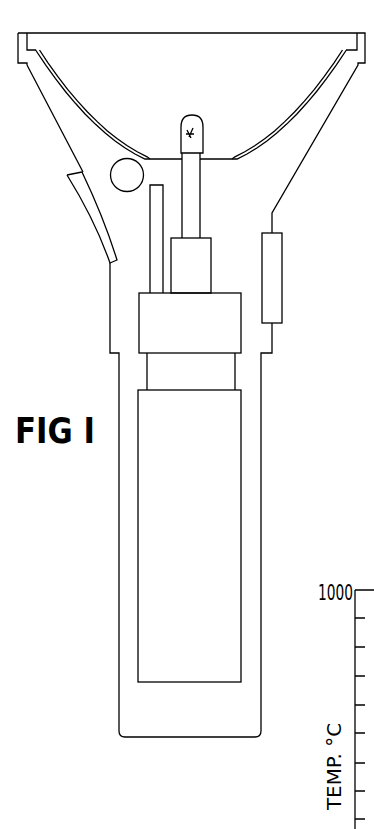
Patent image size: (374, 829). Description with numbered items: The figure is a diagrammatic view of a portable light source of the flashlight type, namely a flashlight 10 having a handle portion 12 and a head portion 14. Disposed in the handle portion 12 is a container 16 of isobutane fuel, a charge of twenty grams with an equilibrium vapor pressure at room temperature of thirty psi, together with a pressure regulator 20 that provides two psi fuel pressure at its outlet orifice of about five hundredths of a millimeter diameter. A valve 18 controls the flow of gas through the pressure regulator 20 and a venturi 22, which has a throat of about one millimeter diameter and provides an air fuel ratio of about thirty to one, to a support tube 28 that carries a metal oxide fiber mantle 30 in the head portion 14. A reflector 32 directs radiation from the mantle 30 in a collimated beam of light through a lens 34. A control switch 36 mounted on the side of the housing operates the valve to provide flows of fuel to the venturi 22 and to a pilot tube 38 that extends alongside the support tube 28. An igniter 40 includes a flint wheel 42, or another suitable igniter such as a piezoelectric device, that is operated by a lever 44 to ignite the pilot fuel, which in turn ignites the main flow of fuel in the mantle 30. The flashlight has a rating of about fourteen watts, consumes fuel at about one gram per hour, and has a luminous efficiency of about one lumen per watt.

The flashlight 10 is at (196, 385).
The handle portion 12 is at (118, 507).
The head portion 14 is at (323, 130).
The container 16 is at (199, 546).
The valve 18 is at (201, 381).
The pressure regulator 20 is at (203, 334).
The venturi 22 is at (201, 272).
The support tube 28 is at (201, 178).
The metal oxide fiber mantle 30 is at (193, 113).
The reflector 32 is at (312, 97).
The lens 34 is at (231, 33).
The control switch 36 is at (283, 268).
The pilot tube 38 is at (150, 208).
The igniter 40 is at (92, 218).
The flint wheel 42 is at (119, 163).
The lever 44 is at (84, 199).